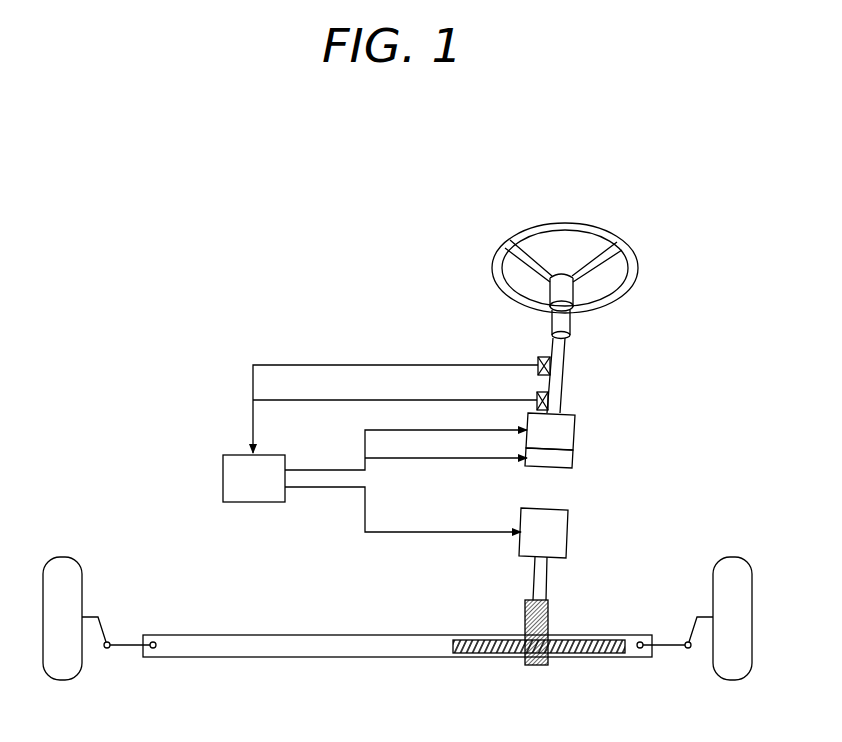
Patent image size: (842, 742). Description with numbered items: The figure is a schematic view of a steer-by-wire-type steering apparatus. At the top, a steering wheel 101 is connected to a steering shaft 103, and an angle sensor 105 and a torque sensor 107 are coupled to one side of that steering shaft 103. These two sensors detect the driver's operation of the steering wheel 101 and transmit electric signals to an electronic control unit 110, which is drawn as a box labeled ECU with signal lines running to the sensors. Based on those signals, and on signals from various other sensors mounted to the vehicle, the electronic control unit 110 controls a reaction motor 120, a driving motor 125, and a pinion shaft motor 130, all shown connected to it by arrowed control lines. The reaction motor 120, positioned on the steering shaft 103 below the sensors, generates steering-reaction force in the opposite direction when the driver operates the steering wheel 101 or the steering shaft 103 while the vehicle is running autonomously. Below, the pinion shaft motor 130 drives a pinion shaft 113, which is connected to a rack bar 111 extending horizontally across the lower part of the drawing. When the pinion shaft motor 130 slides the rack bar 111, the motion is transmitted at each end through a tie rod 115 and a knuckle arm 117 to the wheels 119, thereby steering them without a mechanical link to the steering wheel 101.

The steering wheel 101 is at (632, 272).
The steering shaft 103 is at (566, 379).
The angle sensor 105 is at (537, 362).
The torque sensor 107 is at (536, 396).
The electronic control unit 110 is at (222, 478).
The rack bar 111 is at (324, 650).
The pinion shaft 113 is at (548, 612).
The tie rod 115 is at (120, 648).
The knuckle arm 117 is at (102, 630).
The wheels 119 is at (88, 578).
The reaction motor 120 is at (572, 435).
The driving motor 125 is at (572, 462).
The pinion shaft motor 130 is at (564, 520).